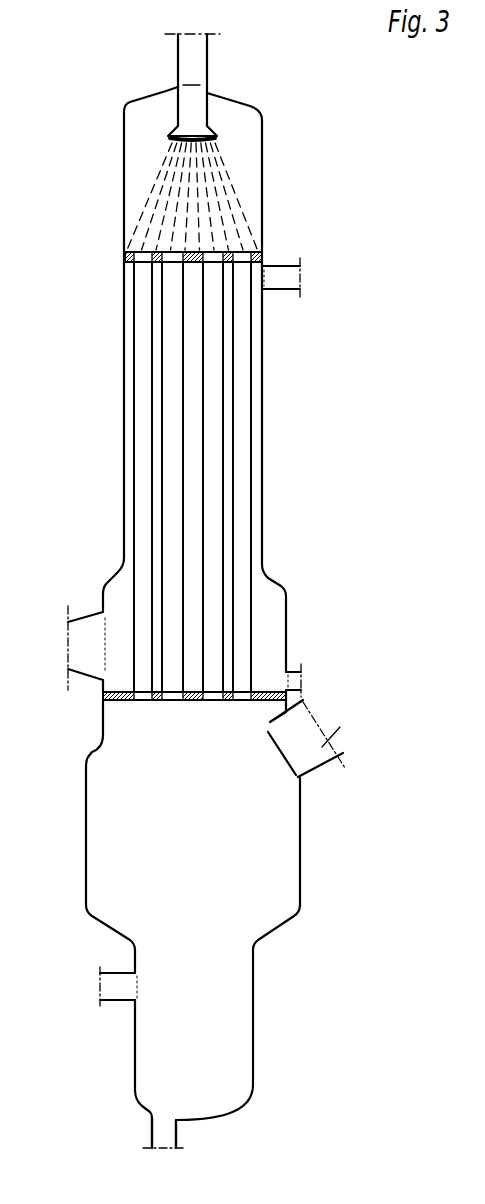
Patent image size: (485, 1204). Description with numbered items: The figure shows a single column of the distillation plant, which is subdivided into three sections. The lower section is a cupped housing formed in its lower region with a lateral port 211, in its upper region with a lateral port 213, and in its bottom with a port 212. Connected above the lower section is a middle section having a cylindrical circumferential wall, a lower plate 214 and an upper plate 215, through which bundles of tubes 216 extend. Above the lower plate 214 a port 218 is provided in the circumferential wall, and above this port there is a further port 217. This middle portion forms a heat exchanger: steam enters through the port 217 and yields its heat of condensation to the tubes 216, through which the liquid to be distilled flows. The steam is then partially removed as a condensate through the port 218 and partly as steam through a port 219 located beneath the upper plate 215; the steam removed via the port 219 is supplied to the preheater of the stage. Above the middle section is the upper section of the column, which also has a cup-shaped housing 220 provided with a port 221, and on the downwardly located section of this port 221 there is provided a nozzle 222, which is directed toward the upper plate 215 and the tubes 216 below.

The lateral port 211 is at (107, 992).
The port 212 is at (158, 1132).
The lateral port 213 is at (318, 746).
The lower plate 214 is at (103, 696).
The upper plate 215 is at (125, 260).
The tubes 216 is at (168, 410).
The port 217 is at (78, 629).
The port 218 is at (303, 672).
The port 219 is at (278, 283).
The cup-shaped housing 220 is at (152, 97).
The port 221 is at (185, 47).
The nozzle 222 is at (172, 128).